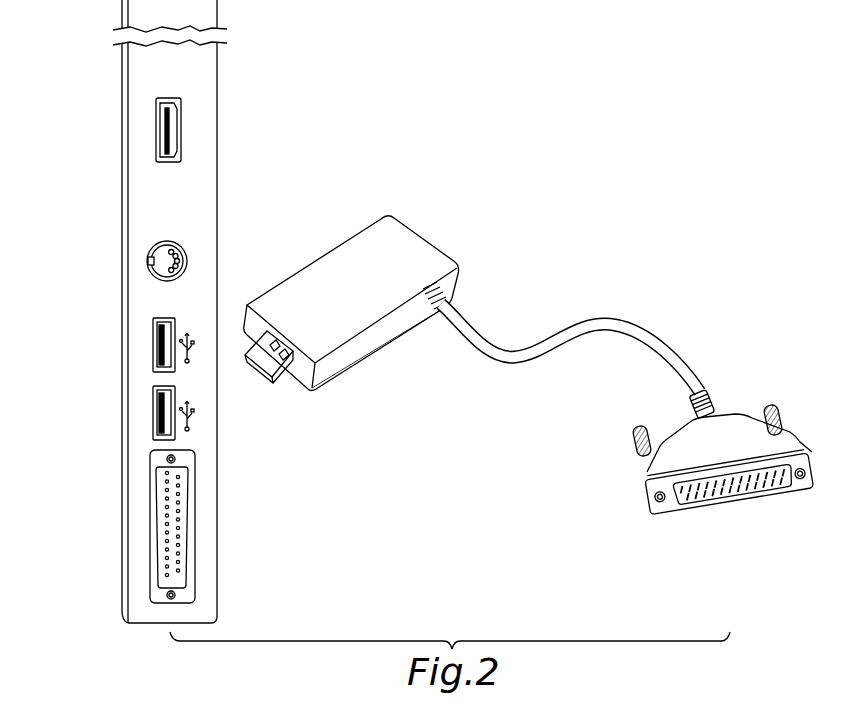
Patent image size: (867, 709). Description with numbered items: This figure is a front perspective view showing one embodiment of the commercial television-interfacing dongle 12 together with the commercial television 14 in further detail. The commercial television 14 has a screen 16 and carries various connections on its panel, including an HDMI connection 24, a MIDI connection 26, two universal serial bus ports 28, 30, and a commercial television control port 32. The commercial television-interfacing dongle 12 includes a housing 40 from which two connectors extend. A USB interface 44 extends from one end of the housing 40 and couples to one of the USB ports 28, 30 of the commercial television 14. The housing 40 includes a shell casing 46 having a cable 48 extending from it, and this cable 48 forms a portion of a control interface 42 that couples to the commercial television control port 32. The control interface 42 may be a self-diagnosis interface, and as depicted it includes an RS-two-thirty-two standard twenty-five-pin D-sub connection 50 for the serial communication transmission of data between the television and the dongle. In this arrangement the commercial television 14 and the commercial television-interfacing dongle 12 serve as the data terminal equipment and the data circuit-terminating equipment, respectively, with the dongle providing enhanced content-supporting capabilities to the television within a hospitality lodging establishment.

The commercial television-interfacing dongle 12 is at (453, 238).
The commercial television 14 is at (219, 168).
The screen 16 is at (122, 197).
The HDMI connection 24 is at (152, 137).
The MIDI connection 26 is at (148, 262).
The universal serial bus (USB) port 28 is at (155, 345).
The universal serial bus (USB) port 30 is at (155, 410).
The commercial television control port 32 is at (155, 530).
The housing 40 is at (375, 232).
The control interface 42 is at (728, 487).
The USB interface 44 is at (256, 372).
The shell casing 46 is at (358, 350).
The cable 48 is at (620, 320).
The RS232 standard DB-25 connection 50 is at (763, 491).